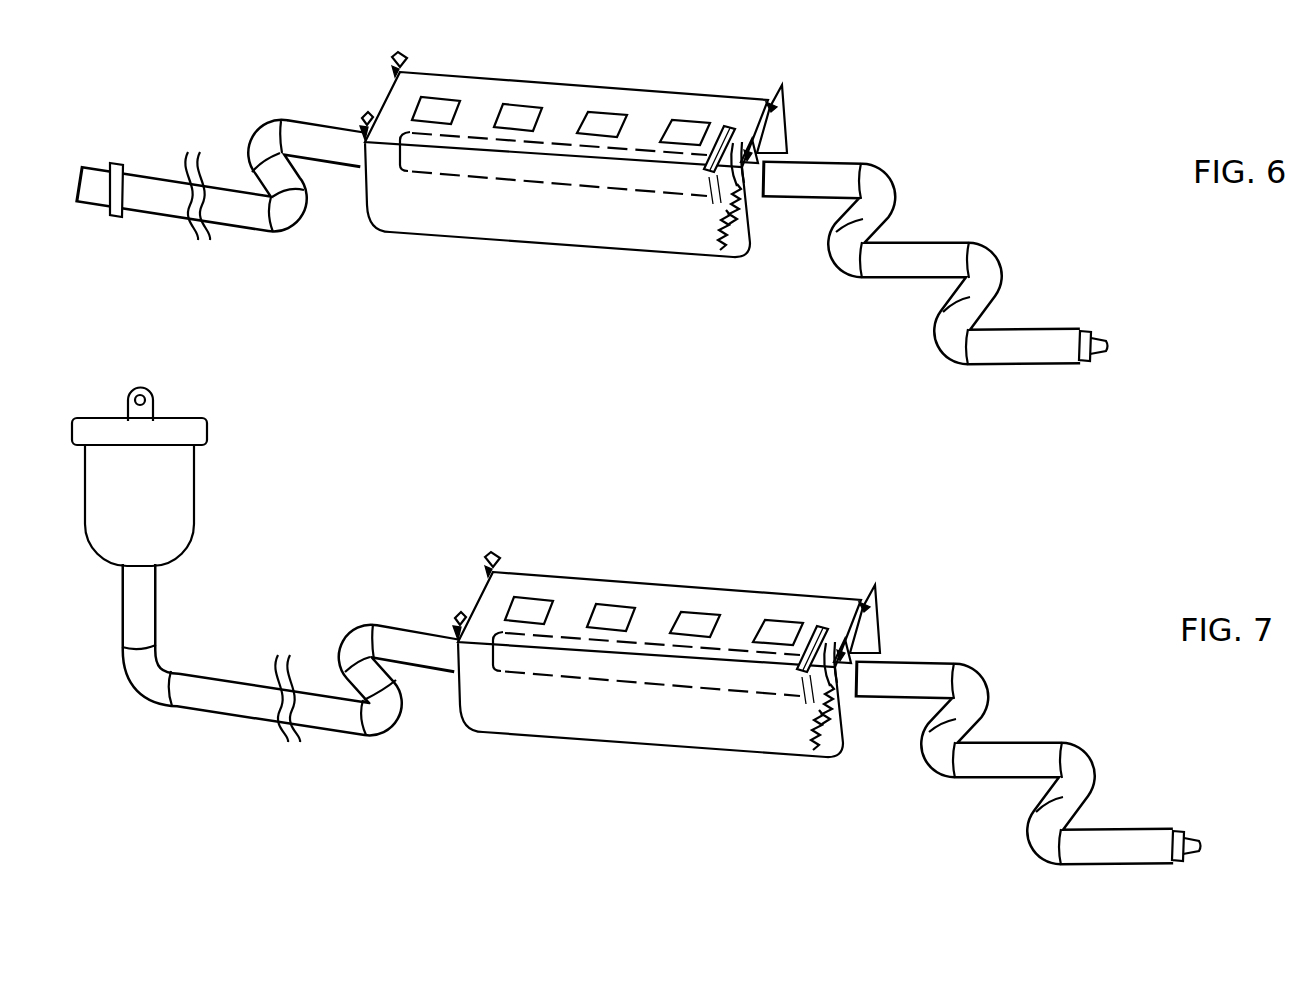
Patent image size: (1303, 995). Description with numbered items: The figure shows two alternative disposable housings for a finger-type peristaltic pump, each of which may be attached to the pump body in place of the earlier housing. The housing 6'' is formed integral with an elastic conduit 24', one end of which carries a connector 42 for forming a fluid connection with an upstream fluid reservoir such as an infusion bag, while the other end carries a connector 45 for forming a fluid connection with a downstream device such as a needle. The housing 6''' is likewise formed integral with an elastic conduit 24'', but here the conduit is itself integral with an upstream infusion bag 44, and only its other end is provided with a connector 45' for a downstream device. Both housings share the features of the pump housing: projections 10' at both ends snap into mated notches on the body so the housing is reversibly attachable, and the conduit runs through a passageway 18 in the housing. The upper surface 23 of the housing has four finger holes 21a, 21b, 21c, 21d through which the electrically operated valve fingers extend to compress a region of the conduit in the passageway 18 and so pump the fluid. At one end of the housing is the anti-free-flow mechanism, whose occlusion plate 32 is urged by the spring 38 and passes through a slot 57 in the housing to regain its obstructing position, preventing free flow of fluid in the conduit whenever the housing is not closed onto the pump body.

In FIG. 6, the housing 6'' is at (593, 224).
In FIG. 7, the housing 6''' is at (636, 627).
In FIG. 6, the projections 10' is at (589, 107).
In FIG. 7, the projections 10' is at (682, 607).
In FIG. 6, the passageway 18 is at (442, 163).
In FIG. 7, the passageway 18 is at (684, 682).
In FIG. 6, the finger hole 21a is at (437, 110).
In FIG. 7, the finger hole 21a is at (549, 578).
In FIG. 6, the finger hole 21b is at (518, 117).
In FIG. 7, the finger hole 21b is at (637, 585).
In FIG. 6, the finger hole 21c is at (602, 122).
In FIG. 7, the finger hole 21c is at (715, 592).
In FIG. 6, the finger hole 21d is at (687, 127).
In FIG. 7, the finger hole 21d is at (786, 591).
In FIG. 6, the upper surface 23 is at (537, 135).
In FIG. 7, the upper surface 23 is at (646, 711).
In FIG. 6, the elastic conduit 24' is at (579, 197).
In FIG. 7, the elastic conduit 24'' is at (1014, 764).
In FIG. 6, the occlusion plate 32 is at (721, 130).
In FIG. 7, the occlusion plate 32 is at (837, 629).
In FIG. 6, the spring 38 is at (717, 230).
In FIG. 7, the spring 38 is at (792, 743).
In FIG. 6, the connector 42 is at (122, 162).
In FIG. 7, the infusion bag 44 is at (175, 510).
In FIG. 6, the connector 45 is at (1081, 375).
In FIG. 7, the connector 45' is at (1171, 821).
In FIG. 6, the slot 57 is at (678, 165).
In FIG. 7, the slot 57 is at (762, 723).